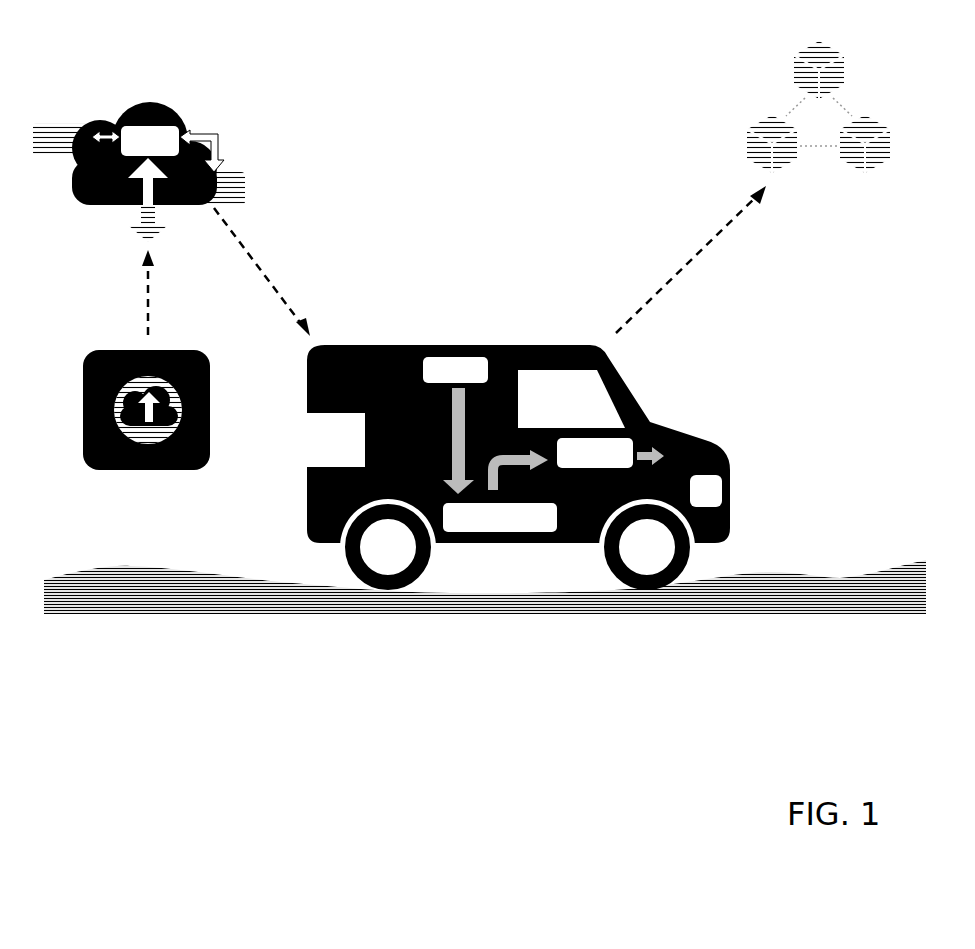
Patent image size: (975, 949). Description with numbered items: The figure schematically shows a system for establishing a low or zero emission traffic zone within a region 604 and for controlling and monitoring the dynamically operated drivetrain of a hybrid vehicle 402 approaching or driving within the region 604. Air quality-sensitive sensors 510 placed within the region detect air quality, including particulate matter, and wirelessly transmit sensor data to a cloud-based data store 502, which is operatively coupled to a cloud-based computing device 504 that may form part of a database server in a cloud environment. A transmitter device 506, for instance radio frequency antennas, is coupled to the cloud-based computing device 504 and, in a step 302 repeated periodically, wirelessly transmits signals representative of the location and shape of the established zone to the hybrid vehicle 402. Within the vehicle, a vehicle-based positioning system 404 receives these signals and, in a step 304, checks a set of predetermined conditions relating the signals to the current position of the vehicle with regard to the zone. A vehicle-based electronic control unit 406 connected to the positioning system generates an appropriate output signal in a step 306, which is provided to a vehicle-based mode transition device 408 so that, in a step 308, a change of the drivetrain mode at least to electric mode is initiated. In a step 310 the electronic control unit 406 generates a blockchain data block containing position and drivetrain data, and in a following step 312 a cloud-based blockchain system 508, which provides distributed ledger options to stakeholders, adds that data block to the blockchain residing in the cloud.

The step of wirelessly transmitting signals 302 is at (264, 279).
The step of checking fulfillment of predetermined conditions 304 is at (452, 431).
The step of generating output signal 306 is at (559, 430).
The step of initiating drivetrain mode change 308 is at (658, 460).
The step of generating blockchain data block 310 is at (620, 331).
The step of adding data block to blockchain 312 is at (756, 197).
The hybrid vehicle 402 is at (734, 456).
The vehicle-based positioning system 404 is at (455, 424).
The vehicle-based electronic control unit 406 is at (500, 519).
The vehicle-based mode transition device 408 is at (610, 454).
The cloud-based data store 502 is at (144, 172).
The cloud-based computing device 504 is at (76, 139).
The transmitter device 506 is at (212, 167).
The cloud-based blockchain system 508 is at (766, 85).
The air quality-sensitive sensors 510 is at (84, 351).
The region 604 is at (877, 568).